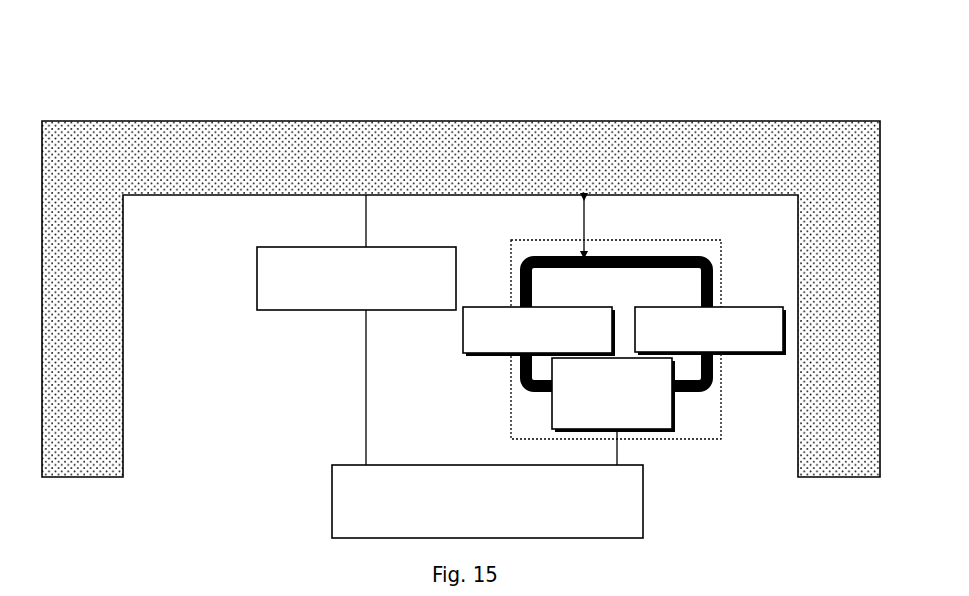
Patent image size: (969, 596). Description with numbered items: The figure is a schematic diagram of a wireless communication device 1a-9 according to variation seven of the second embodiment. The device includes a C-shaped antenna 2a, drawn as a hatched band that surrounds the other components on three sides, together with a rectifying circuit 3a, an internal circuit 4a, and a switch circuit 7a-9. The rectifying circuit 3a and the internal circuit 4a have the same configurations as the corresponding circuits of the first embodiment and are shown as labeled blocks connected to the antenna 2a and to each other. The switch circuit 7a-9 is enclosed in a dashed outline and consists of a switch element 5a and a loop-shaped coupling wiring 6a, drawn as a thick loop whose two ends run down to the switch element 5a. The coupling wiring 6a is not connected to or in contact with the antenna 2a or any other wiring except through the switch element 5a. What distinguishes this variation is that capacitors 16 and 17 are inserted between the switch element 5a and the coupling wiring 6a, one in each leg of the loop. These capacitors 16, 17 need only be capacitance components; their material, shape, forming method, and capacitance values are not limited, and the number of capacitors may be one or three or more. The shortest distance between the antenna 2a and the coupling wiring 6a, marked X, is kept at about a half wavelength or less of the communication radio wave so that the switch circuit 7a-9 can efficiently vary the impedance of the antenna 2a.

The wireless communication device 1a-9 is at (466, 35).
The antenna 2a is at (70, 136).
The rectifying circuit 3a is at (257, 282).
The internal circuit 4a is at (332, 497).
The switch element 5a is at (552, 406).
The coupling wiring 6a is at (688, 253).
The switch circuit 7a-9 is at (704, 441).
The capacitor 16 is at (492, 306).
The capacitor 17 is at (753, 306).